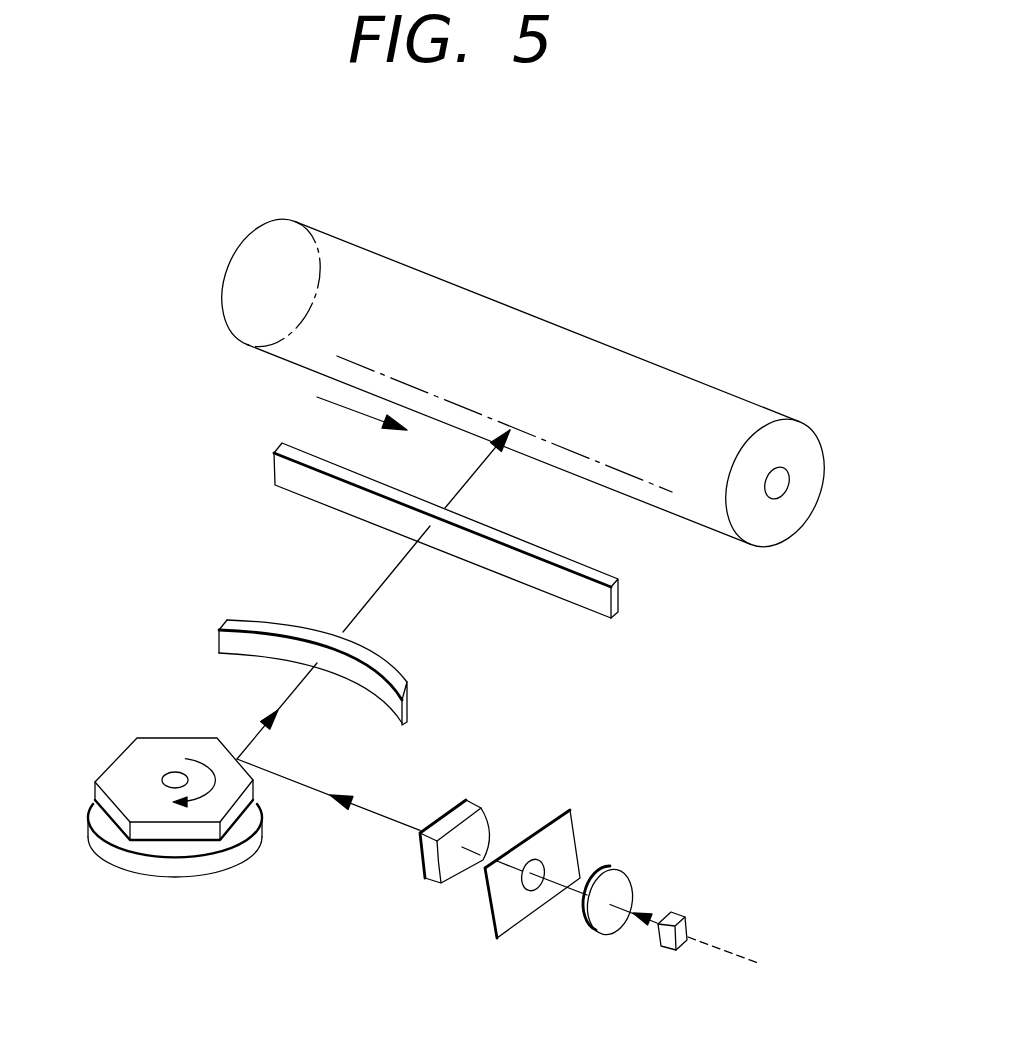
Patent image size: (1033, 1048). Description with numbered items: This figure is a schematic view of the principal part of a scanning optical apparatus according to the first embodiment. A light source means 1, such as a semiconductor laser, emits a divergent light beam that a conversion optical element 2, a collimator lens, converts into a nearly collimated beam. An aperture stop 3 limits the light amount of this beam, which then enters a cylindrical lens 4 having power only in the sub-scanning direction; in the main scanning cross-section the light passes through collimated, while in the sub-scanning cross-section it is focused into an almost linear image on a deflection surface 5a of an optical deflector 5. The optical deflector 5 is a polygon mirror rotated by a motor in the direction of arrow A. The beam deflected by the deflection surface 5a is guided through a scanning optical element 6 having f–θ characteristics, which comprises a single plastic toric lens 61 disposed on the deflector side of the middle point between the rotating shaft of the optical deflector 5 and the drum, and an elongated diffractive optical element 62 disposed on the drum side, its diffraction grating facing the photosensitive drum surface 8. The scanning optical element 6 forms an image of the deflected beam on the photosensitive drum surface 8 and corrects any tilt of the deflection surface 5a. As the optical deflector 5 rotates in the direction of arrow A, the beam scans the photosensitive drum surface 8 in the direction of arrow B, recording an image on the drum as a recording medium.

The light source means 1 is at (665, 950).
The conversion optical element 2 is at (604, 935).
The aperture stop 3 is at (497, 898).
The cylindrical lens 4 is at (420, 858).
The optical deflector 5 is at (165, 804).
The deflection surface 5a is at (227, 738).
The scanning optical element 6 is at (432, 608).
The toric lens 61 is at (351, 689).
The diffractive optical element 62 is at (576, 605).
The photosensitive drum surface 8 is at (665, 513).
The arrow A is at (198, 797).
The arrow B is at (345, 407).